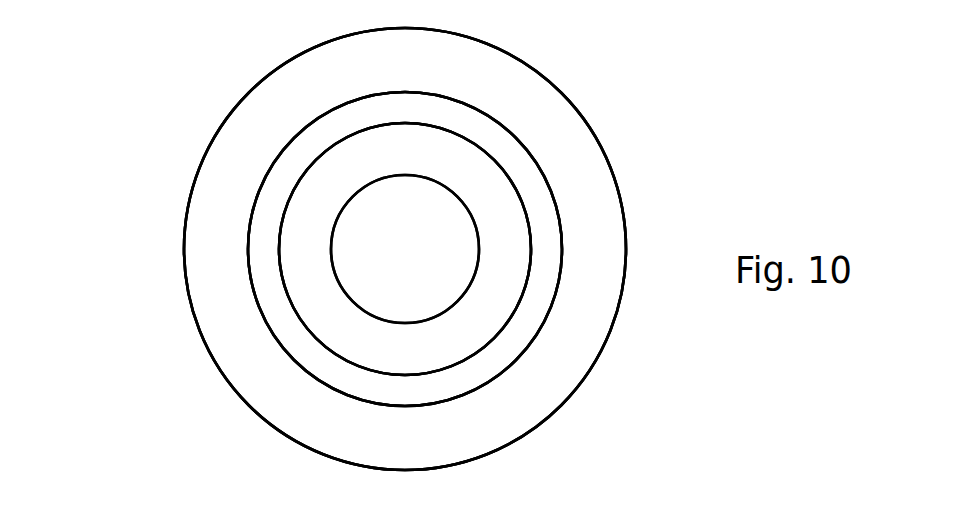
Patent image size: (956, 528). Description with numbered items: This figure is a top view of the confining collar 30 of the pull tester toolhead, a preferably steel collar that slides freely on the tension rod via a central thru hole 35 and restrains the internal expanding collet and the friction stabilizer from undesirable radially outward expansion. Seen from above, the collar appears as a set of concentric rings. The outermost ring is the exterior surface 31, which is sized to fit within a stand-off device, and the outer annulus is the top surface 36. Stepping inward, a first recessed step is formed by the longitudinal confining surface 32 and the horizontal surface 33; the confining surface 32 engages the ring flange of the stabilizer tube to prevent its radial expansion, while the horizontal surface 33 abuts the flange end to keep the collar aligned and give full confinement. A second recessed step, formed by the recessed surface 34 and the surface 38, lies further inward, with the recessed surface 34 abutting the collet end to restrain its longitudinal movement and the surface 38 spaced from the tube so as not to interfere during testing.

The confining collar 30 is at (157, 154).
The exterior surface 31 is at (598, 150).
The longitudinal confining surface 32 is at (557, 290).
The horizontal surface 33 is at (556, 226).
The recessed surface 34 is at (516, 250).
The thru hole 35 is at (475, 272).
The top surface 36 is at (582, 168).
The surface 38 is at (502, 325).